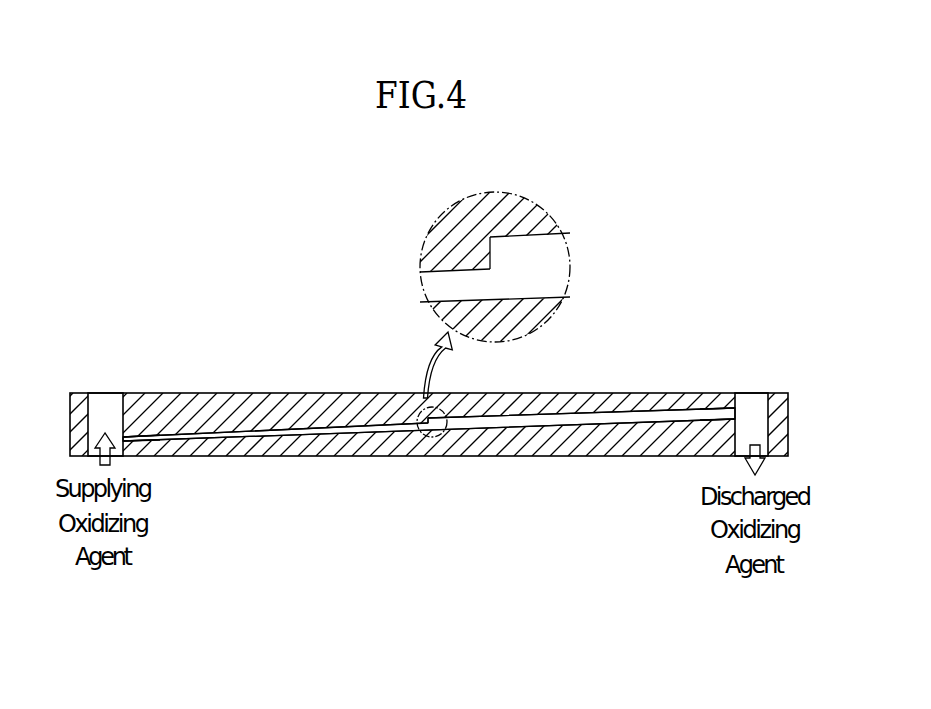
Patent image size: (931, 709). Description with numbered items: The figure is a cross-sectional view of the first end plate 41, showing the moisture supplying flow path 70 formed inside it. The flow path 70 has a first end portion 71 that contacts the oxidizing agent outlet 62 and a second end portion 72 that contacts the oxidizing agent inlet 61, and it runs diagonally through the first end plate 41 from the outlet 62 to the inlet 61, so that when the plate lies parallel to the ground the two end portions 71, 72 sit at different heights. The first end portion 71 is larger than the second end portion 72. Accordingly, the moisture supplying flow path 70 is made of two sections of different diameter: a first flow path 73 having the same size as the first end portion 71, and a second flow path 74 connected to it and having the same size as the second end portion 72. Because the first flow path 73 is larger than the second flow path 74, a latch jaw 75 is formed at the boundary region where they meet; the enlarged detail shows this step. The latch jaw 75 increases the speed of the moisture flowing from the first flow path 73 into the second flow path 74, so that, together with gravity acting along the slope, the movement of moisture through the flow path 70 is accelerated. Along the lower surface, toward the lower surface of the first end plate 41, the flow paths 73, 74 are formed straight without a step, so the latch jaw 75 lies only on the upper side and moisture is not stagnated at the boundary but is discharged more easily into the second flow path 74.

The first end plate 41 is at (305, 378).
The oxidizing agent inlet 61 is at (109, 403).
The oxidizing agent outlet 62 is at (756, 402).
The moisture supplying flow path 70 is at (477, 446).
The first end portion 71 is at (720, 410).
The second end portion 72 is at (147, 434).
The first flow path 73 is at (560, 429).
The second flow path 74 is at (327, 436).
The latch jaw 75 is at (472, 251).